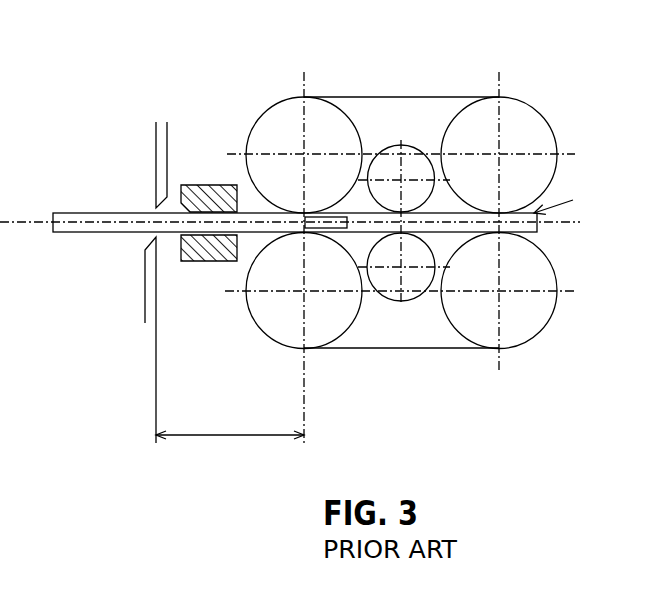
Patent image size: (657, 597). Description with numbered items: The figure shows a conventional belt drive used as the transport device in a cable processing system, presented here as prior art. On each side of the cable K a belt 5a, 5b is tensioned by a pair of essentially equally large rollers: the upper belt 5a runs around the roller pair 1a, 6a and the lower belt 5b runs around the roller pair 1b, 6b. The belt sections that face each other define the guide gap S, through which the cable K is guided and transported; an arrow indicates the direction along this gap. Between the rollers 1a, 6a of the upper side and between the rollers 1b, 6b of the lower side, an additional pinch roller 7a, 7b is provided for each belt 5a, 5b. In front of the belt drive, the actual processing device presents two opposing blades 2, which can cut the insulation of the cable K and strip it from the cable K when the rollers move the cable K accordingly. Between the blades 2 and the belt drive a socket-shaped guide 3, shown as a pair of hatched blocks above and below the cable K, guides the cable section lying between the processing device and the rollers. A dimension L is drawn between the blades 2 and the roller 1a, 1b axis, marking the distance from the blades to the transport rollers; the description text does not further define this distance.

The cable K is at (67, 213).
The blades 2 is at (156, 152).
The socket-shaped guide 3 is at (207, 261).
The large roller 1a is at (273, 122).
The large roller 1b is at (273, 317).
The belt 5a is at (410, 97).
The belt 5b is at (419, 348).
The roller 6a is at (527, 120).
The roller 6b is at (527, 327).
The pinch roller 7a is at (387, 161).
The pinch roller 7b is at (387, 283).
The guide gap S is at (578, 195).
The distance L is at (230, 427).